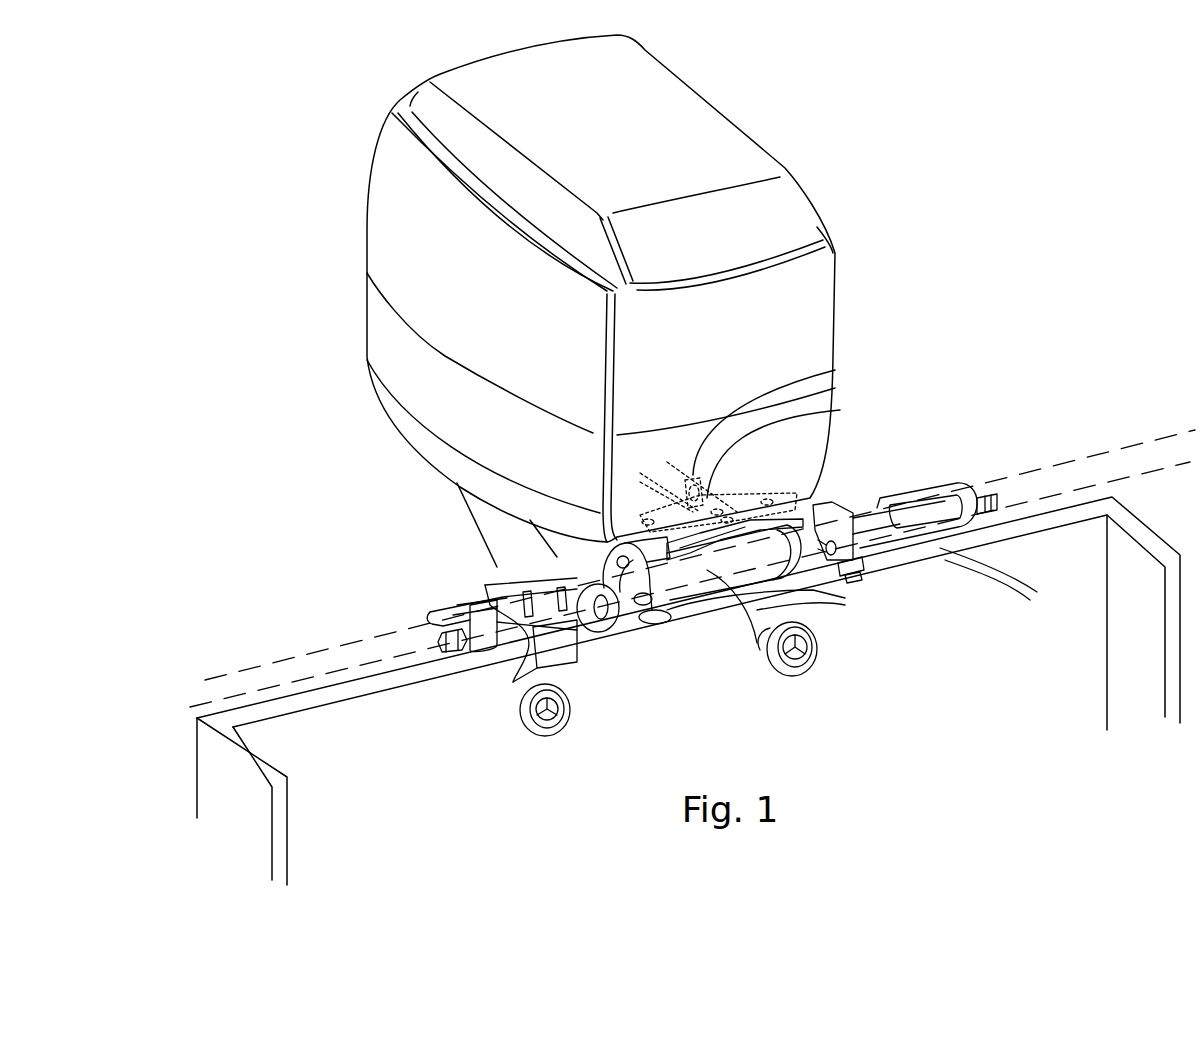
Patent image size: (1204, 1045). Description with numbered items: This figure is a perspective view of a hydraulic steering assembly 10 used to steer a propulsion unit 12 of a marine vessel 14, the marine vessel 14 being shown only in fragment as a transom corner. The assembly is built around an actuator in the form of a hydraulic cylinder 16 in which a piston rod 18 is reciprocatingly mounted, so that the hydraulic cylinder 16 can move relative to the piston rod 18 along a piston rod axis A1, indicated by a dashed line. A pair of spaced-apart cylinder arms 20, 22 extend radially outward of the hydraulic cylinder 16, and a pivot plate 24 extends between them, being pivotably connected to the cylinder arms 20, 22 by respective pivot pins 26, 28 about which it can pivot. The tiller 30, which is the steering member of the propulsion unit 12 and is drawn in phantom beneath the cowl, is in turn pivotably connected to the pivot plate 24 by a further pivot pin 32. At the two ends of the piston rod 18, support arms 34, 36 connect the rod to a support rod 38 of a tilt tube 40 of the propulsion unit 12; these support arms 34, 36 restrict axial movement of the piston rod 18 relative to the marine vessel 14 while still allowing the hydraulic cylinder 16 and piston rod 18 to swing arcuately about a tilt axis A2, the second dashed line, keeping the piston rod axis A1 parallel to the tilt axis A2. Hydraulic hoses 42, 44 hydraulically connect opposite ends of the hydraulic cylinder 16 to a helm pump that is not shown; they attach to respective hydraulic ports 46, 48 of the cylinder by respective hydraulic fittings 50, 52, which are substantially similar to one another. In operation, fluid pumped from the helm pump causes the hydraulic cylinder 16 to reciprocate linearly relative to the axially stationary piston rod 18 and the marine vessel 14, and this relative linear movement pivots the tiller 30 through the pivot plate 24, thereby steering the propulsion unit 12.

The hydraulic steering assembly 10 is at (733, 615).
The propulsion unit 12 is at (428, 240).
The marine vessel 14 is at (1145, 577).
The hydraulic cylinder 16 is at (768, 667).
The piston rod 18 is at (932, 520).
The cylinder arm 20 is at (630, 615).
The cylinder arm 22 is at (838, 555).
The pivot plate 24 is at (803, 510).
The pivot pin 26 is at (710, 618).
The pivot pin 28 is at (808, 617).
The tiller 30 is at (707, 505).
The pivot pin 32 is at (690, 477).
The support arm 34 is at (457, 592).
The support arm 36 is at (880, 500).
The support rod 38 is at (513, 682).
The tilt tube 40 is at (580, 632).
The hydraulic hose 42 is at (812, 618).
The hydraulic hose 44 is at (1008, 585).
The hydraulic port 46 is at (673, 612).
The hydraulic port 48 is at (860, 592).
The hydraulic fitting 50 is at (682, 618).
The hydraulic fitting 52 is at (842, 568).
The piston rod axis A1 is at (262, 690).
The tilt axis A2 is at (353, 642).